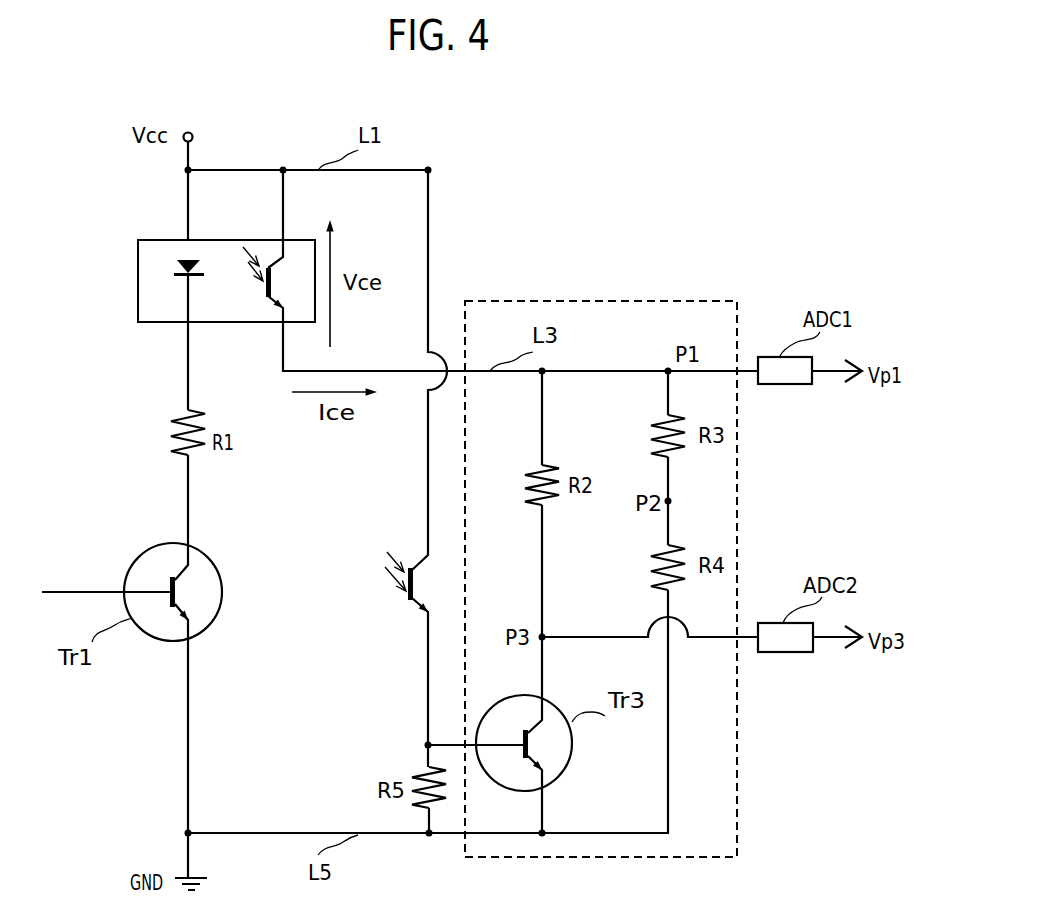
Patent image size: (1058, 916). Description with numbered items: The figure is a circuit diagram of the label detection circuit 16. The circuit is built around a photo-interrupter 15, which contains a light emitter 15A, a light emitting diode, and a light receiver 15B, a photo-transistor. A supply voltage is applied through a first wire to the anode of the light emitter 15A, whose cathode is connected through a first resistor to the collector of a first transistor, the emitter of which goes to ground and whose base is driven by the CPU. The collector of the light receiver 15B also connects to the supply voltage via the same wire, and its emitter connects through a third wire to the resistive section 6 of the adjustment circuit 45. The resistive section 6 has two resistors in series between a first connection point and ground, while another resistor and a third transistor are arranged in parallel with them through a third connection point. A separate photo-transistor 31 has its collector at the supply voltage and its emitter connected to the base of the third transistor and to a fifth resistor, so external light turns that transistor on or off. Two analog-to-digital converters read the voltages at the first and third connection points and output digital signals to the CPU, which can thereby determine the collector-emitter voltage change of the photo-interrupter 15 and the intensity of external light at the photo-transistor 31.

The photo-interrupter 15 is at (200, 330).
The light emitter 15A is at (163, 279).
The light receiver 15B is at (260, 300).
The label detection circuit 16 is at (633, 233).
The photo-transistor 31 is at (402, 612).
The adjustment circuit 45 is at (740, 302).
The resistive section 6 is at (573, 412).